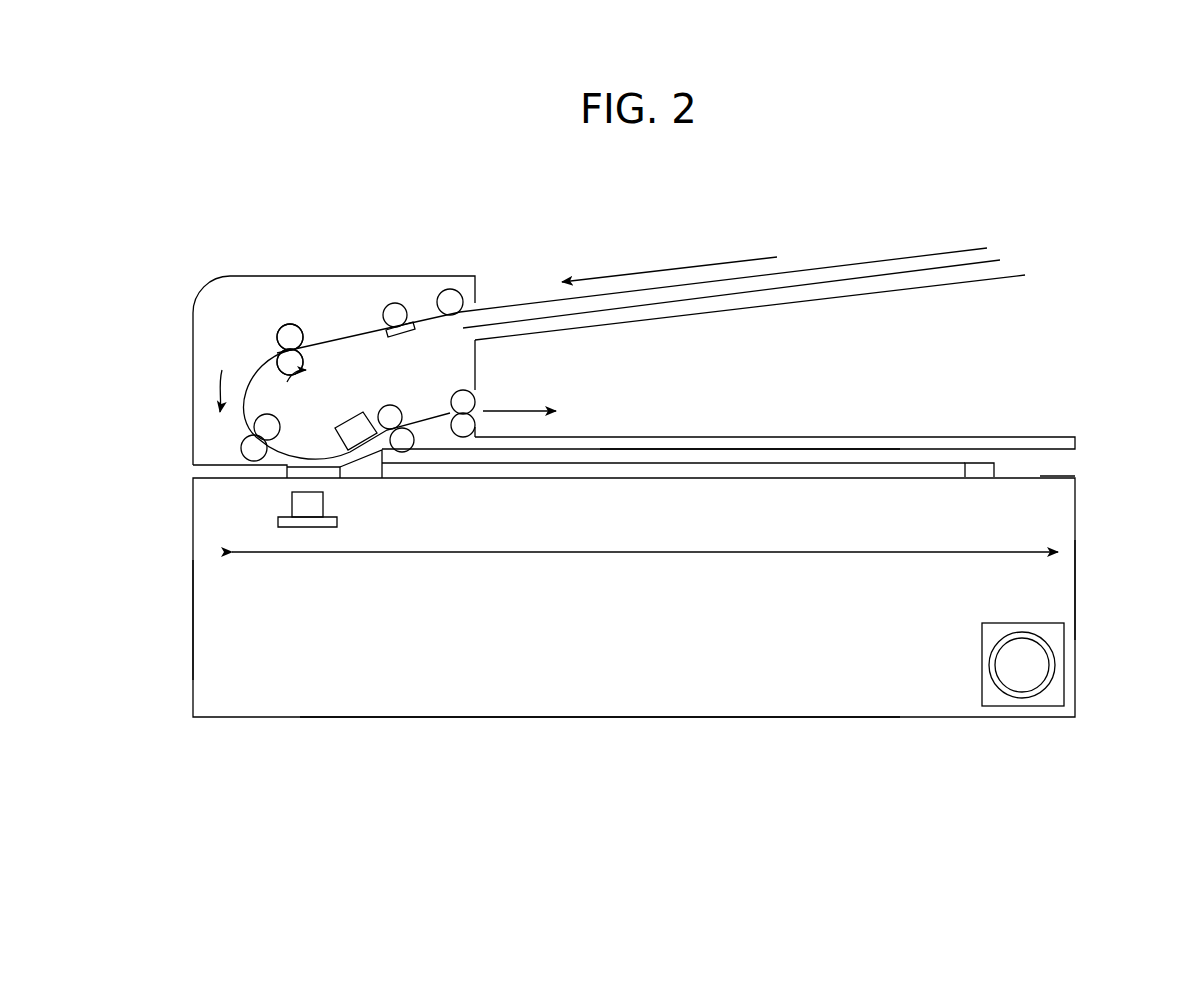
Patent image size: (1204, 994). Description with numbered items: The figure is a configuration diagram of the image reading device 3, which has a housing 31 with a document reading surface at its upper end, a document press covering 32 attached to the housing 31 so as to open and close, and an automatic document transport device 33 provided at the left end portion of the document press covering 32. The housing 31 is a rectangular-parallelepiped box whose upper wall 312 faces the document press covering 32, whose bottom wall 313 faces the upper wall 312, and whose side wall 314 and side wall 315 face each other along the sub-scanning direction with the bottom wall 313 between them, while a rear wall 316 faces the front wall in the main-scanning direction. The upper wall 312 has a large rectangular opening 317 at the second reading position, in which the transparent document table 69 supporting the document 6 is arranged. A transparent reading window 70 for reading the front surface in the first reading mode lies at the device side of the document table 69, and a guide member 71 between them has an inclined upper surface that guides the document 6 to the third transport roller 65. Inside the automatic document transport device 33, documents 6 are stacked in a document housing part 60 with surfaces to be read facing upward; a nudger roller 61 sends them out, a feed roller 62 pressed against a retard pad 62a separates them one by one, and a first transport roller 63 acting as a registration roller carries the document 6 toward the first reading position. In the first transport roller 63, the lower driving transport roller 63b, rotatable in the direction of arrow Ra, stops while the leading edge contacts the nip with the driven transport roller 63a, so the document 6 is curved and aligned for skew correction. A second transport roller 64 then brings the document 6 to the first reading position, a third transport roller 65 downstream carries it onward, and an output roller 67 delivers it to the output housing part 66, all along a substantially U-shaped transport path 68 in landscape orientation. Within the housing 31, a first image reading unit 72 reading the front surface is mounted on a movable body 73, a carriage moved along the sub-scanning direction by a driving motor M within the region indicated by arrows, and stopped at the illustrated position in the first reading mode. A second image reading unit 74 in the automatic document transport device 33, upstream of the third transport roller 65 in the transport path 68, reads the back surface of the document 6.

The image reading device 3 is at (715, 218).
The document 6 is at (866, 262).
The housing 31 is at (1080, 515).
The document press covering 32 is at (1037, 435).
The automatic document transport device 33 is at (258, 275).
The document housing part 60 is at (975, 285).
The nudger roller 61 is at (450, 289).
The feed roller 62 is at (395, 303).
The retard pad 62a is at (400, 337).
The first transport roller 63 is at (289, 322).
The transport roller 63a is at (277, 335).
The transport roller 63b is at (277, 363).
The second transport roller 64 is at (242, 418).
The third transport roller 65 is at (392, 405).
The output housing part 66 is at (640, 437).
The output roller 67 is at (478, 392).
The transport path 68 is at (243, 390).
The document table 69 is at (740, 449).
The reading window 70 is at (325, 472).
The guide member 71 is at (368, 470).
The first image reading unit 72 is at (292, 505).
The movable body 73 is at (318, 527).
The second image reading unit 74 is at (357, 420).
The upper wall 312 is at (1040, 476).
The bottom wall 313 is at (600, 718).
The side wall 314 is at (193, 617).
The side wall 315 is at (1078, 590).
The rear wall 316 is at (907, 495).
The opening 317 is at (853, 477).
The driving motor M is at (1052, 638).
The arrow Ra is at (309, 386).